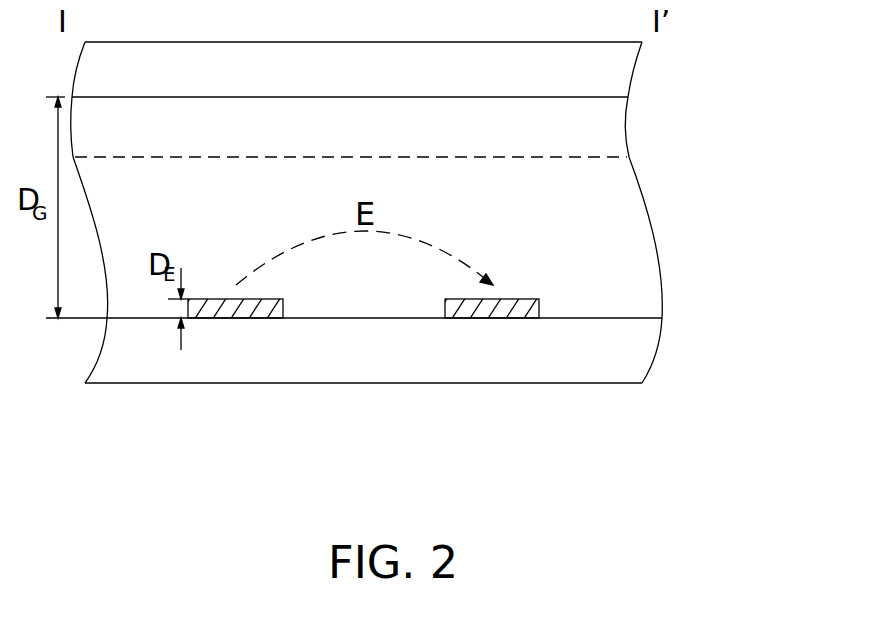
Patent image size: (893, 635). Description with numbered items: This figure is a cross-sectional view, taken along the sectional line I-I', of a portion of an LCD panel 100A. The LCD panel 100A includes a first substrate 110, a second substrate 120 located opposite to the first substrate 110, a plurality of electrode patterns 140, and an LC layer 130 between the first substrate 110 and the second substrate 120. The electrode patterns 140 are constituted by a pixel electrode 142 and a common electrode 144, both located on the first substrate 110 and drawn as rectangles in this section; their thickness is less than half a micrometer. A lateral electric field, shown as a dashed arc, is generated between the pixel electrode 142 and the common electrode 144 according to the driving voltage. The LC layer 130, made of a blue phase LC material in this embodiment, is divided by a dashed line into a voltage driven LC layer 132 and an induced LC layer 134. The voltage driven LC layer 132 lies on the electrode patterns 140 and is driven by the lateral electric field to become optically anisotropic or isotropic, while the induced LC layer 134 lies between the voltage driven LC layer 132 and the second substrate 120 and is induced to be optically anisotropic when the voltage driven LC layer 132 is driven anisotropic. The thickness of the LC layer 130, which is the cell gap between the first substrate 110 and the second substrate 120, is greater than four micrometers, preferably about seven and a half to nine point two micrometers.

The LCD panel 100A is at (423, 281).
The first substrate 110 is at (622, 355).
The second substrate 120 is at (622, 77).
The LC layer 130 is at (425, 207).
The voltage driven LC layer 132 is at (624, 213).
The induced LC layer 134 is at (620, 127).
The electrode patterns 140 is at (366, 390).
The pixel electrode 142 is at (255, 310).
The common electrode 144 is at (494, 367).